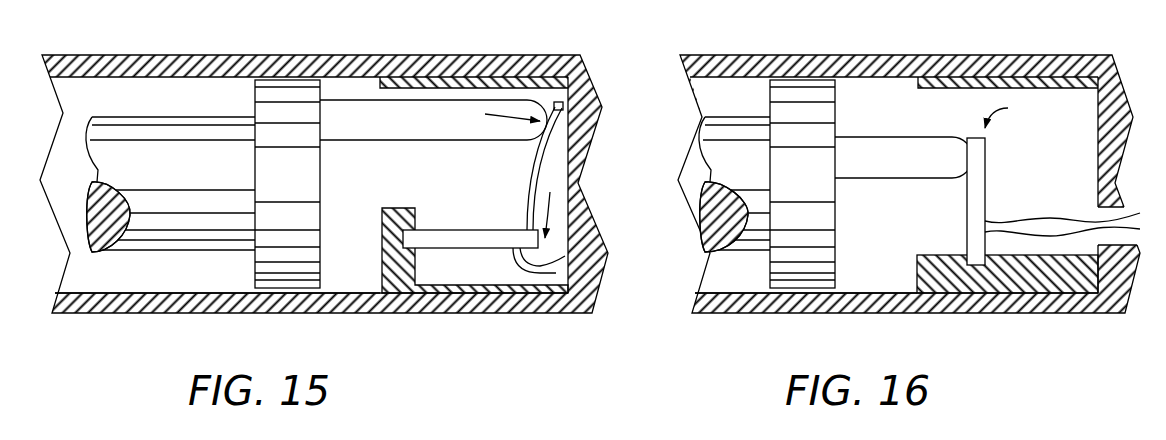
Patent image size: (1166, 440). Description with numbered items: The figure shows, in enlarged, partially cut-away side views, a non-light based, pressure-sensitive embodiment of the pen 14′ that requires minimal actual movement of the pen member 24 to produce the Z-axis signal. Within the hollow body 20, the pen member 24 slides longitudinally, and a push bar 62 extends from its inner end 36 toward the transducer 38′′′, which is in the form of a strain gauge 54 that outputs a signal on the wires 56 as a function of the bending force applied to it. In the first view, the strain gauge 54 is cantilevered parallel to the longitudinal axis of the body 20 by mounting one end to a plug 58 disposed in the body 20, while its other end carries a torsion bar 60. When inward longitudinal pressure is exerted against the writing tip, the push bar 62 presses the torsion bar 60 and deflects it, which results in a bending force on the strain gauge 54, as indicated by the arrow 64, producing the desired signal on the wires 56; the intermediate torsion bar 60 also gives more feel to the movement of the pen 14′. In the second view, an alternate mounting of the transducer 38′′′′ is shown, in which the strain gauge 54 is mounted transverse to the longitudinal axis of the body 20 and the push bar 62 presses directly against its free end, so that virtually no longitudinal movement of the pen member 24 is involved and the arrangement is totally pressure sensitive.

In FIG. 15, the pen 14′ is at (470, 325).
In FIG. 16, the pen 14′ is at (697, 322).
In FIG. 15, the hollow body 20 is at (105, 313).
In FIG. 16, the hollow body 20 is at (777, 313).
In FIG. 15, the pen member 24 is at (151, 252).
In FIG. 16, the pen member 24 is at (735, 252).
In FIG. 15, the inner end 36 is at (237, 262).
In FIG. 16, the inner end 36 is at (802, 184).
In FIG. 15, the transducer 38′′′ is at (460, 194).
In FIG. 16, the transducer 38′′′′ is at (897, 122).
In FIG. 15, the strain gauge 54 is at (538, 252).
In FIG. 16, the strain gauge 54 is at (967, 197).
In FIG. 15, the wires 56 is at (568, 268).
In FIG. 16, the wires 56 is at (1070, 220).
In FIG. 15, the plug 58 is at (590, 85).
In FIG. 16, the plug 58 is at (1053, 313).
In FIG. 15, the torsion bar 60 is at (537, 175).
In FIG. 15, the push bar 62 is at (540, 108).
In FIG. 16, the push bar 62 is at (953, 152).
In FIG. 15, the arrow 64 is at (553, 203).